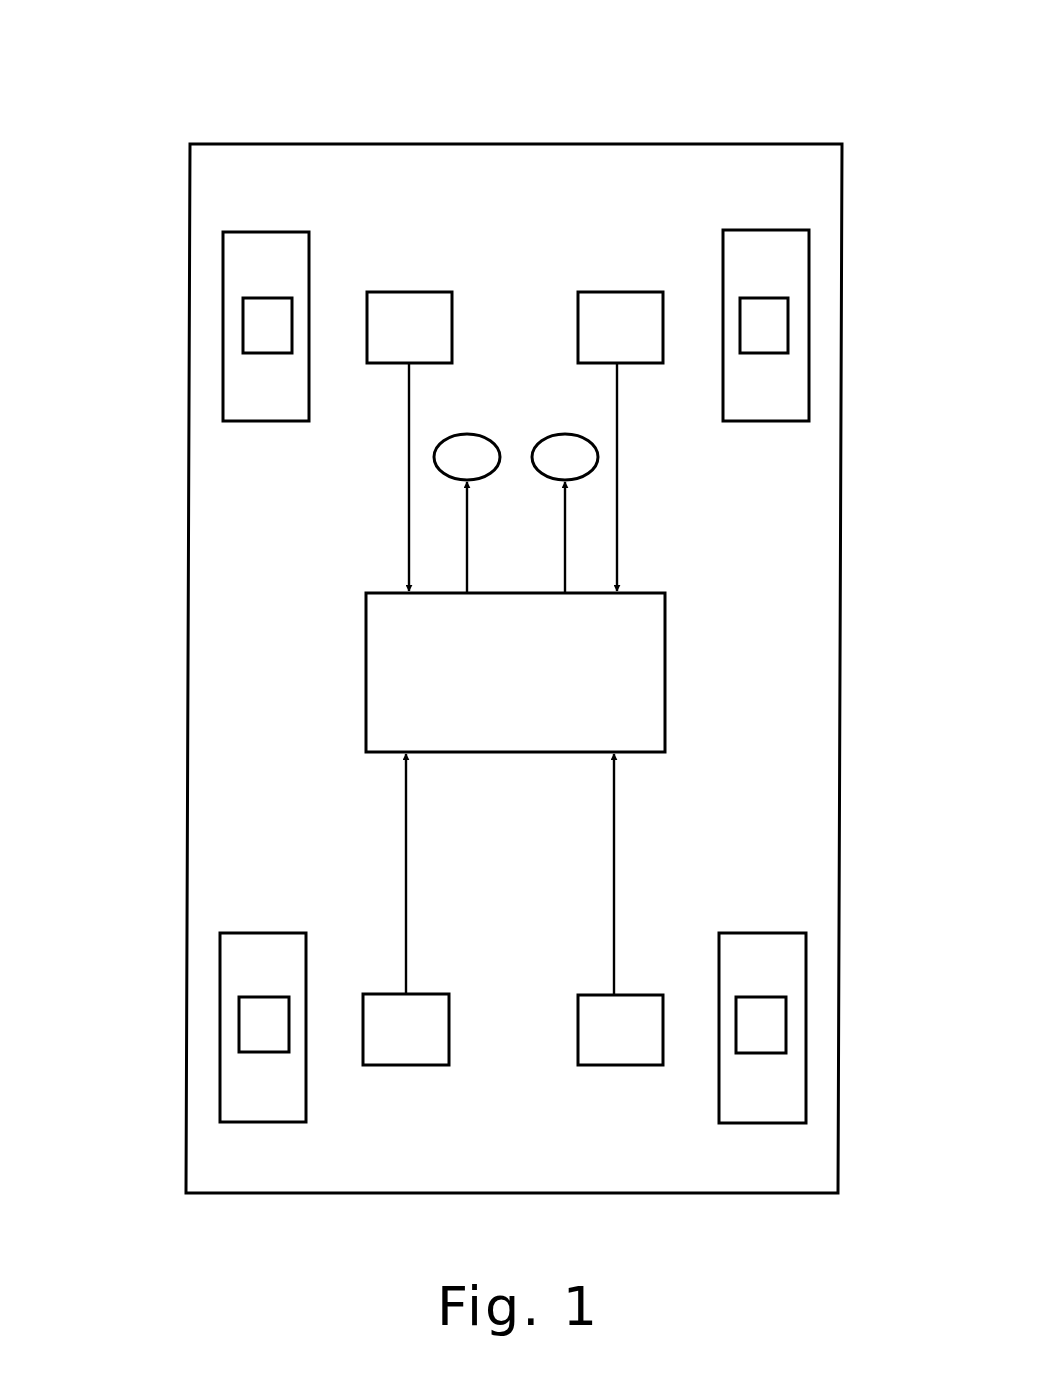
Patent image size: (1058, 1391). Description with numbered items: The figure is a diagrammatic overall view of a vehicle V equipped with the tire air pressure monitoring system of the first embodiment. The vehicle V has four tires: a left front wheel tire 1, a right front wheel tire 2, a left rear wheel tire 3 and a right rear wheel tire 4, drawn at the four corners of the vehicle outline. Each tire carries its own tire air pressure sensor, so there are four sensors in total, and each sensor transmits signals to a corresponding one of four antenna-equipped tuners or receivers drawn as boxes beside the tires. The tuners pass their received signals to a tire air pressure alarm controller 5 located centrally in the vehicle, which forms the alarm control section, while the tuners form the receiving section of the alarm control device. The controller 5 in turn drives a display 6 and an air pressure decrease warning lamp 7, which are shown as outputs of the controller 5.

The vehicle V is at (582, 122).
The left front wheel tire 1 is at (243, 271).
The right front wheel tire 2 is at (788, 262).
The left rear wheel tire 3 is at (240, 977).
The right rear wheel tire 4 is at (784, 978).
The tire air pressure alarm controller 5 is at (665, 644).
The display 6 is at (474, 450).
The air pressure decrease warning lamp 7 is at (567, 450).